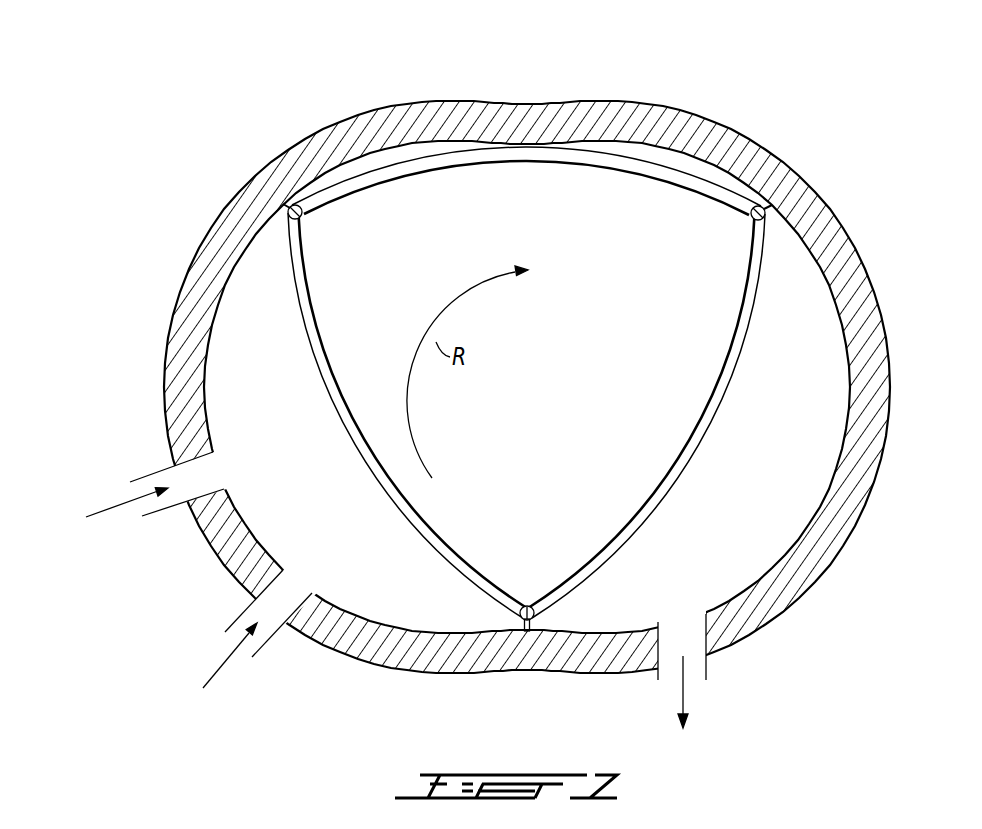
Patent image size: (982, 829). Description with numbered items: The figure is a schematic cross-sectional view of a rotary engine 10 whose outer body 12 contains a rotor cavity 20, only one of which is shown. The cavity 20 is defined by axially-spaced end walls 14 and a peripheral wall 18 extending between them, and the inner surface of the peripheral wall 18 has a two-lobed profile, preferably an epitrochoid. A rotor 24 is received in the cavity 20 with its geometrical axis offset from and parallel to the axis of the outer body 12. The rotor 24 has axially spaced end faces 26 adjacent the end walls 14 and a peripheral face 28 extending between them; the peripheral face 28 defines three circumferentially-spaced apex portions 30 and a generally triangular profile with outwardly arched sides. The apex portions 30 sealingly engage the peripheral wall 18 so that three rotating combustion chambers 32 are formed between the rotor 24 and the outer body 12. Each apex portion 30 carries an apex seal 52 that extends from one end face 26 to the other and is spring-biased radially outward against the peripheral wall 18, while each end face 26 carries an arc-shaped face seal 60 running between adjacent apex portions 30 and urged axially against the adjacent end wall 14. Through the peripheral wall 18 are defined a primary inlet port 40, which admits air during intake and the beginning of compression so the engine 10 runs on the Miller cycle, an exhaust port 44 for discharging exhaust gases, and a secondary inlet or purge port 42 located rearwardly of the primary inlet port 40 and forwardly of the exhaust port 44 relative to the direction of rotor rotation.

The rotary engine 10 is at (504, 378).
The outer body 12 is at (180, 276).
The end walls 14 is at (795, 298).
The peripheral wall 18 is at (768, 153).
The rotor cavity 20 is at (826, 373).
The rotor 24 is at (397, 155).
The end faces 26 is at (520, 195).
The peripheral face 28 is at (687, 470).
The apex portions 30 is at (546, 630).
The combustion chambers 32 is at (300, 453).
The primary inlet port 40 is at (198, 478).
The secondary inlet port 42 is at (277, 597).
The exhaust port 44 is at (693, 669).
The apex seal 52 is at (529, 628).
The face seal 60 is at (648, 505).